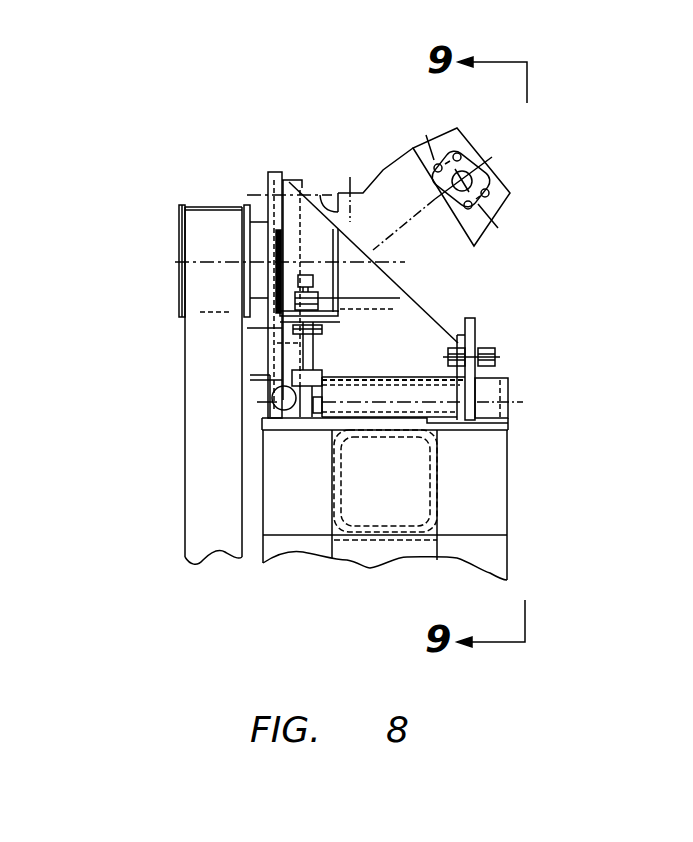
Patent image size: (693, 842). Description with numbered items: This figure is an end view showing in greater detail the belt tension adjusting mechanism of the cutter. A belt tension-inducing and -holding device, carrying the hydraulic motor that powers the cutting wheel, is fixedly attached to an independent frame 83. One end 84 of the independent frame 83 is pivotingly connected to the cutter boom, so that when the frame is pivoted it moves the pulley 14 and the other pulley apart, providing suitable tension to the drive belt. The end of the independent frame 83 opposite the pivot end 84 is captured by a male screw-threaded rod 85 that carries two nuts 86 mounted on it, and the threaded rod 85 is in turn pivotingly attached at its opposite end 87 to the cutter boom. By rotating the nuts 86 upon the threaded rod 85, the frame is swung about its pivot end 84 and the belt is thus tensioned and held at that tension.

The pulley 14 is at (183, 217).
The independent frame 83 is at (404, 275).
The end of independent frame 84 is at (512, 403).
The male screw-threaded rod 85 is at (473, 317).
The nuts 86 is at (317, 371).
The opposite end of threaded rod 87 is at (300, 407).